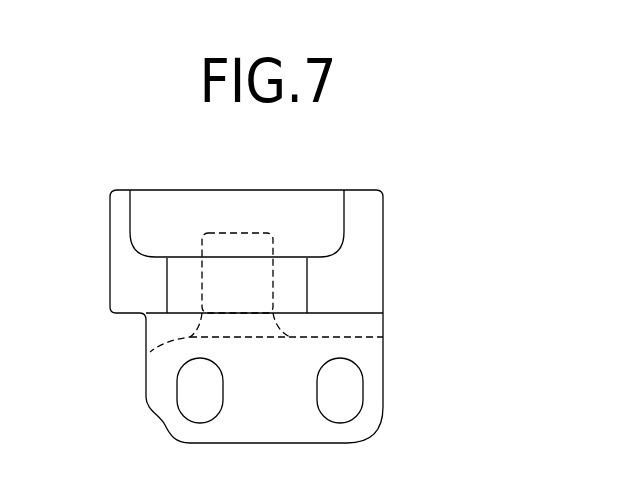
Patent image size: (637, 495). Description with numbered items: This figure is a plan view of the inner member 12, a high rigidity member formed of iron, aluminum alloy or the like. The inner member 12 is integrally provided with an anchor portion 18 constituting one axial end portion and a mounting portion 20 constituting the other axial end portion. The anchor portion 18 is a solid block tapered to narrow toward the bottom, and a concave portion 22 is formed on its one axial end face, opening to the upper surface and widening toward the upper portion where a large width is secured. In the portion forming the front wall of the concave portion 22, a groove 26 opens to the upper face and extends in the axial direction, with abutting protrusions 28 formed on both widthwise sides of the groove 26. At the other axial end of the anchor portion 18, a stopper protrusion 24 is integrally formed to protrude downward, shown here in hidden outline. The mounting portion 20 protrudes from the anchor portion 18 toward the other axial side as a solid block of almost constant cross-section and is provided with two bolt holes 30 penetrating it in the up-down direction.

The inner member 12 is at (421, 229).
The anchor portion 18 is at (122, 222).
The mounting portion 20 is at (270, 422).
The concave portion 22 is at (340, 240).
The stopper protrusion 24 is at (222, 282).
The groove 26 is at (305, 285).
The abutting protrusions 28 is at (137, 287).
The bolt holes 30 is at (188, 398).